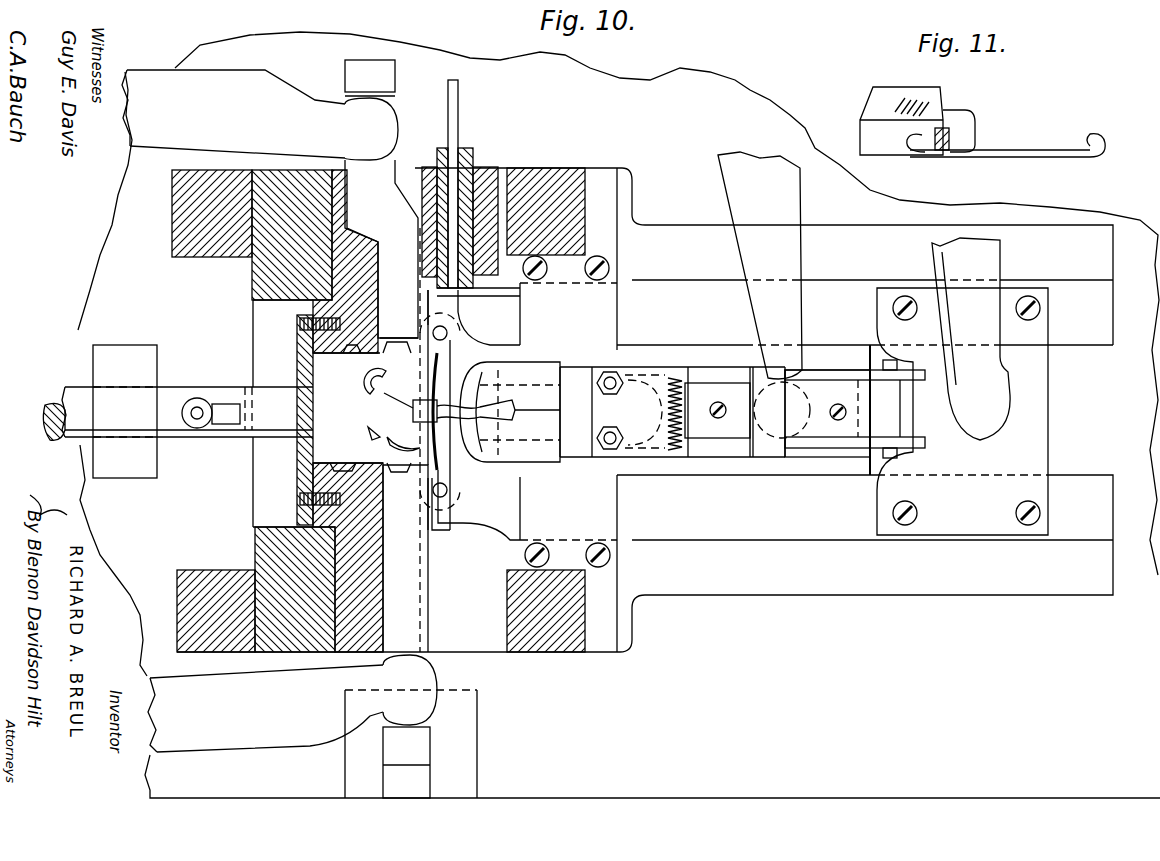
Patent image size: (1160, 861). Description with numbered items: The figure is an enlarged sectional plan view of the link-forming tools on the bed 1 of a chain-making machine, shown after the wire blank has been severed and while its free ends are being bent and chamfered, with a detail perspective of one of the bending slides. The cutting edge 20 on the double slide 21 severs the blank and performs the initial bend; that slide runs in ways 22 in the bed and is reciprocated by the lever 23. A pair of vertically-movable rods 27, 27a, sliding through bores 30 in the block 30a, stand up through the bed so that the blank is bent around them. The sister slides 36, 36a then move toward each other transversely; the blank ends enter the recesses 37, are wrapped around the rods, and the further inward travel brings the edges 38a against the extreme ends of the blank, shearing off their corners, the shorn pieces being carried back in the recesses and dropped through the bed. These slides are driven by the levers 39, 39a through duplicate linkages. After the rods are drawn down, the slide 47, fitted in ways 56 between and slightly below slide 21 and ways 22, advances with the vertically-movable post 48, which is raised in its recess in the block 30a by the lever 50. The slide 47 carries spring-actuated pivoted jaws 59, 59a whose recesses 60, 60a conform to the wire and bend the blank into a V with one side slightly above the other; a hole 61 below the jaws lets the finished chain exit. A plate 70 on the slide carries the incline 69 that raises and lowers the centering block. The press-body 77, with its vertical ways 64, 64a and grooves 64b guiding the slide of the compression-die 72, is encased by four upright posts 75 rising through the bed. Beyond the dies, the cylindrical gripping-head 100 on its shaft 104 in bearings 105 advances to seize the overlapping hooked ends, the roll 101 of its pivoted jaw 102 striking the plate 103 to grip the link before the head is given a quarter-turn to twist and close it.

In FIG. 10, the bed 1 is at (645, 407).
In FIG. 10, the cutting edge 20 is at (500, 308).
In FIG. 10, the double slide 21 is at (670, 407).
In FIG. 10, the ways 22 is at (838, 278).
In FIG. 10, the lever 23 is at (962, 386).
In FIG. 10, the vertically-movable rod 27 is at (445, 522).
In FIG. 10, the vertically-movable rod 27a is at (432, 322).
In FIG. 10, the bores 30 is at (432, 332).
In FIG. 10, the block 30a is at (439, 410).
In FIG. 10, the sister slide 36 is at (405, 558).
In FIG. 11, the sister slide 36 is at (917, 121).
In FIG. 10, the sister slide 36a is at (381, 199).
In FIG. 10, the recesses 37 is at (386, 390).
In FIG. 11, the recesses 37 is at (950, 135).
In FIG. 10, the shearing edges 38a is at (395, 485).
In FIG. 11, the shearing edges 38a is at (948, 142).
In FIG. 10, the lever 39 is at (312, 726).
In FIG. 10, the lever 39a is at (260, 115).
In FIG. 10, the slide 47 is at (712, 372).
In FIG. 10, the vertically-movable post 48 is at (430, 422).
In FIG. 10, the lever 50 is at (760, 265).
In FIG. 10, the ways 56 is at (762, 470).
In FIG. 10, the spring-actuated pivoted jaw 59 is at (538, 410).
In FIG. 10, the spring-actuated pivoted jaw 59a is at (545, 395).
In FIG. 10, the recess 60 is at (510, 412).
In FIG. 10, the recess 60a is at (507, 395).
In FIG. 10, the hole 61 is at (498, 402).
In FIG. 10, the vertical way 64 is at (352, 472).
In FIG. 10, the vertical way 64a is at (352, 353).
In FIG. 10, the grooves 64b is at (370, 462).
In FIG. 10, the incline 69 is at (828, 462).
In FIG. 10, the plate 70 is at (839, 410).
In FIG. 10, the compression-die 72 is at (365, 400).
In FIG. 10, the upright posts 75 is at (203, 255).
In FIG. 10, the press-body 77 is at (258, 283).
In FIG. 10, the cylindrical gripping-head 100 is at (187, 411).
In FIG. 10, the roll 101 is at (196, 398).
In FIG. 10, the pivoted jaw 102 is at (224, 424).
In FIG. 10, the plate 103 is at (300, 452).
In FIG. 10, the shaft 104 is at (65, 400).
In FIG. 10, the bearings 105 is at (125, 411).